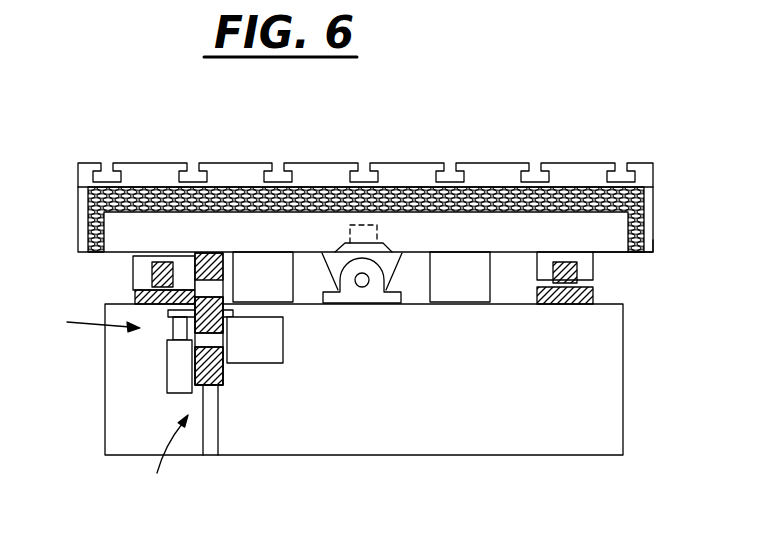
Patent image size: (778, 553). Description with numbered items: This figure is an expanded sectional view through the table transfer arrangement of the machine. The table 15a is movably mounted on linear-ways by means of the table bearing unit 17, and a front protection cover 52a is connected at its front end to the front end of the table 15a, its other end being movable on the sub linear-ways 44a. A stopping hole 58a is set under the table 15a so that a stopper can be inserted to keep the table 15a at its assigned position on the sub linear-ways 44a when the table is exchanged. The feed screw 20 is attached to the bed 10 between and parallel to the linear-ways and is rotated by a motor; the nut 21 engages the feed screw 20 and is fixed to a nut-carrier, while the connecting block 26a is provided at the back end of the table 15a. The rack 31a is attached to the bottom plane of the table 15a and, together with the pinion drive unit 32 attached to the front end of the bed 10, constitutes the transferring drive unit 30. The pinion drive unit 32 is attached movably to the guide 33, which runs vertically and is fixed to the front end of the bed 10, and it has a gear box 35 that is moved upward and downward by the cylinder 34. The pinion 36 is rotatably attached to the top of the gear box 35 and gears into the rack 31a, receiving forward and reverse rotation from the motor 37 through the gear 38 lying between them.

The bed 10 is at (623, 380).
The table 15a is at (505, 163).
The front protection cover 52a is at (592, 198).
The stopping hole 58a is at (381, 225).
The table bearing unit 17 is at (593, 259).
The feed screw 20 is at (362, 287).
The nut 21 is at (395, 262).
The connecting block 26a is at (292, 290).
The transferring drive unit 30 is at (84, 323).
The rack 31a is at (214, 253).
The pinion drive unit 32 is at (151, 455).
The guide 33 is at (244, 441).
The cylinder 34 is at (167, 373).
The gear box 35 is at (221, 388).
The pinion 36 is at (133, 262).
The motor 37 is at (283, 360).
The gear 38 is at (224, 365).
The sub linear-way 44a is at (593, 278).